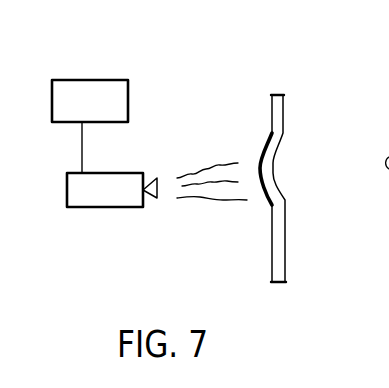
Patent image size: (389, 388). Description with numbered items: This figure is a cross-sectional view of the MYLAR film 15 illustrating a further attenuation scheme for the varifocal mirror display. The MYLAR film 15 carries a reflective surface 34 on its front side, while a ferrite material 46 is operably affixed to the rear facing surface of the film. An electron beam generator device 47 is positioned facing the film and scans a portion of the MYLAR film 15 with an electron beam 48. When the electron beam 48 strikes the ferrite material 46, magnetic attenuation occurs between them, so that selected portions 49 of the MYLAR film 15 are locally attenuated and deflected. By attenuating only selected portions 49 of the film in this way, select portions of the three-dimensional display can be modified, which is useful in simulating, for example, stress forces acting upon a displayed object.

The MYLAR film 15 is at (277, 94).
The reflective surface 34 is at (285, 111).
The ferrite material 46 is at (272, 257).
The electron beam generator device 47 is at (62, 131).
The electron beam 48 is at (215, 203).
The selected portions 49 is at (259, 156).